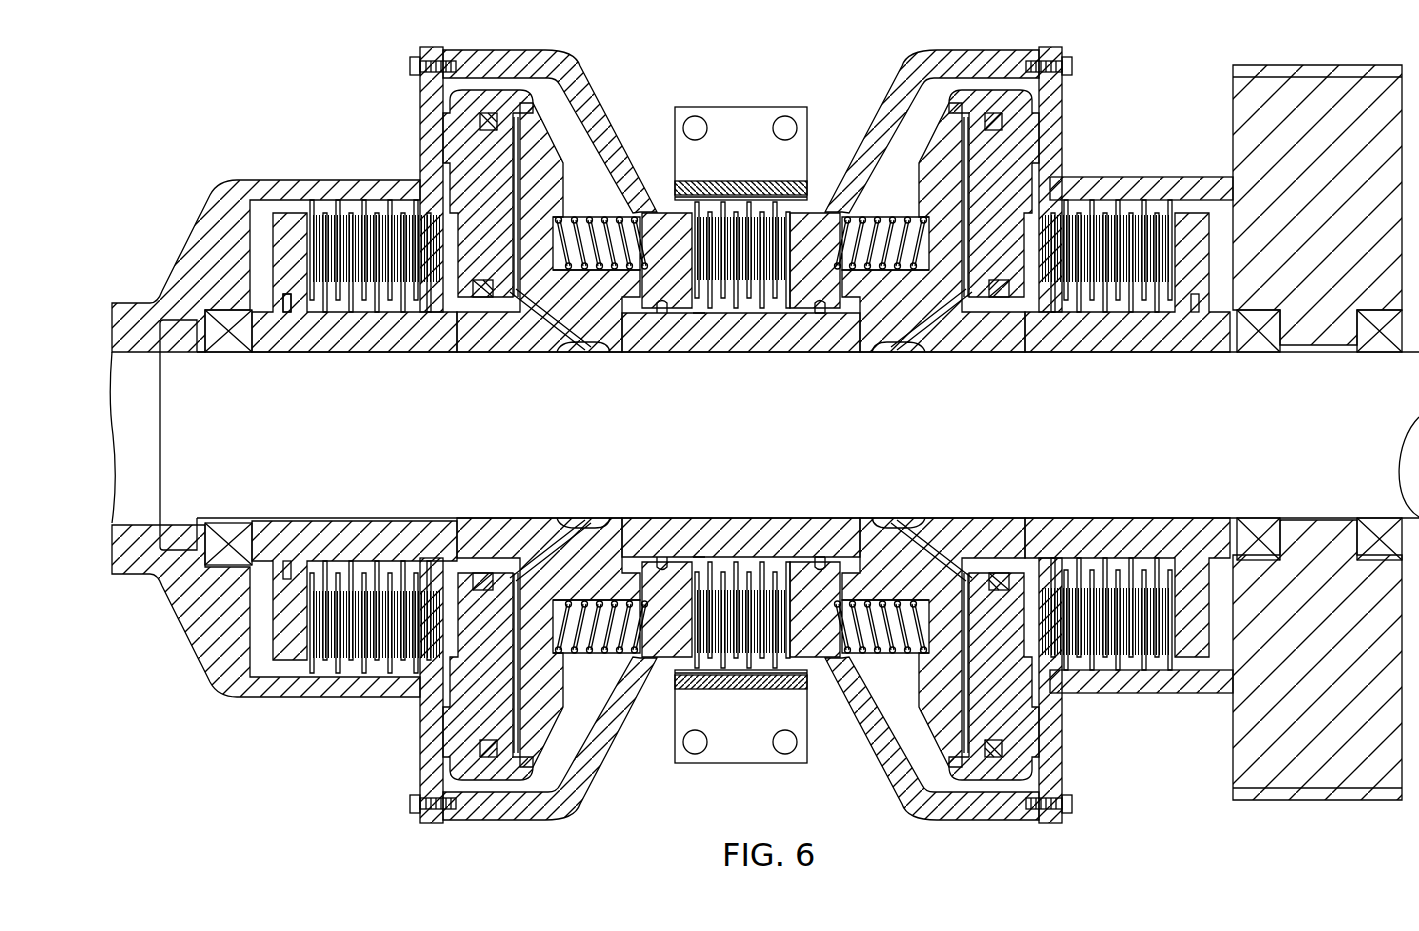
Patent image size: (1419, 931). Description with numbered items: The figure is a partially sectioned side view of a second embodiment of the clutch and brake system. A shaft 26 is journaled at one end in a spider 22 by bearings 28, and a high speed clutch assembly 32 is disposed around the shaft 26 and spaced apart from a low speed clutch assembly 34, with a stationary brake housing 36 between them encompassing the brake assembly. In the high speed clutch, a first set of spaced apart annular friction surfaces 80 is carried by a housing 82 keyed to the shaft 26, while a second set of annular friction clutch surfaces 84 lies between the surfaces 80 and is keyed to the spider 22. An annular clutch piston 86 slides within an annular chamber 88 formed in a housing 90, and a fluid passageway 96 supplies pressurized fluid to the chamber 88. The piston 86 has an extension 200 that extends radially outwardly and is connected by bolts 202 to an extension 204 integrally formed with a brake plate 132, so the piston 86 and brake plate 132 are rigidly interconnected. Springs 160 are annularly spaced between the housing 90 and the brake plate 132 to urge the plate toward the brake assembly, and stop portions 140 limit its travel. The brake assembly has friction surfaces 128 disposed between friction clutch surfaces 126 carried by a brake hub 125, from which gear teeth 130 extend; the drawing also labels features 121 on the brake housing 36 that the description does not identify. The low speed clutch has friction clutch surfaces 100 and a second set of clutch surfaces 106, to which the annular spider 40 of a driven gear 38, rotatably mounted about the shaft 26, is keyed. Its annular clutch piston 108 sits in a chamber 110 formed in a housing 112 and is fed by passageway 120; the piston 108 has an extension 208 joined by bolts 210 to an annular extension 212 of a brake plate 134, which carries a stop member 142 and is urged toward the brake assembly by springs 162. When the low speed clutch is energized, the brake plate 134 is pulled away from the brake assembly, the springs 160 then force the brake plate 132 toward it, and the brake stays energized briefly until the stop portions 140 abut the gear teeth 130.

The spider 22 is at (195, 235).
The shaft 26 is at (776, 446).
The bearings 28 is at (213, 330).
The high speed clutch assembly 32 is at (335, 135).
The low speed clutch assembly 34 is at (1148, 158).
The stationary brake housing 36 is at (740, 181).
The driven gear 38 is at (1327, 224).
The annular spider 40 is at (1103, 178).
The first set of annular friction surfaces 80 is at (325, 312).
The housing 82 is at (407, 339).
The second set of annular friction clutch surfaces 84 is at (345, 198).
The annular clutch piston 86 is at (481, 248).
The annular chamber 88 is at (517, 114).
The housing 90 is at (551, 186).
The fluid passageway 96 is at (535, 352).
The friction clutch surfaces 100 is at (1145, 300).
The second set of clutch surfaces 106 is at (1145, 200).
The annular clutch piston 108 is at (1027, 243).
The chamber 110 is at (965, 115).
The housing 112 is at (985, 108).
The passageway 120 is at (960, 352).
The holes 121 is at (694, 118).
The brake hub 125 is at (805, 338).
The friction clutch surfaces 126 is at (735, 300).
The friction surfaces 128 is at (800, 197).
The gear teeth 130 is at (705, 318).
The brake plate 132 is at (652, 296).
The brake plate 134 is at (838, 289).
The stop portions 140 is at (658, 318).
The stop member 142 is at (825, 318).
The springs 160 is at (600, 210).
The springs 162 is at (896, 218).
The extension 200 is at (446, 46).
The bolts 202 is at (412, 62).
The extension 204 is at (592, 94).
The extension 208 is at (1060, 128).
The bolts 210 is at (1068, 62).
The annular extension 212 is at (898, 86).